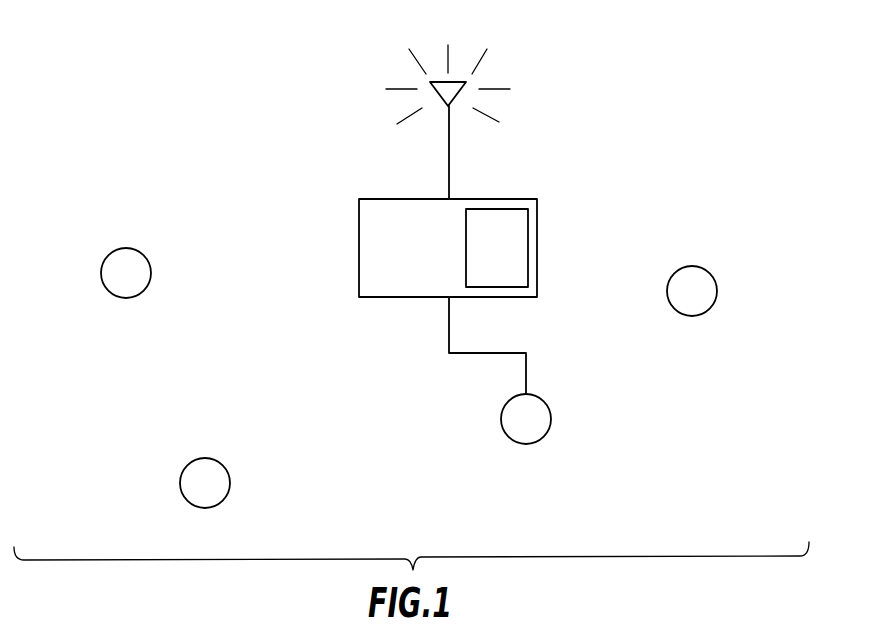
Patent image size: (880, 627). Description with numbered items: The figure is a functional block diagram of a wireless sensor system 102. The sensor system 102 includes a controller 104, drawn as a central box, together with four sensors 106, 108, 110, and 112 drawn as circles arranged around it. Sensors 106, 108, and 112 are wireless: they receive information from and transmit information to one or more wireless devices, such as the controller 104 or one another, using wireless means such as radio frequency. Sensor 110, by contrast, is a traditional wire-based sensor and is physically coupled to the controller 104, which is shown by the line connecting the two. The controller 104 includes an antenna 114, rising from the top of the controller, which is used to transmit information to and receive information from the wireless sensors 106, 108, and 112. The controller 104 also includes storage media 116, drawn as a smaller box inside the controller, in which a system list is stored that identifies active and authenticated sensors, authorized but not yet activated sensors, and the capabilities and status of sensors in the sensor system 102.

The sensor system 102 is at (158, 110).
The controller 104 is at (359, 223).
The sensor 106 is at (111, 252).
The sensor 108 is at (185, 465).
The sensor 110 is at (502, 408).
The sensor 112 is at (710, 271).
The antenna 114 is at (449, 178).
The storage media 116 is at (466, 226).